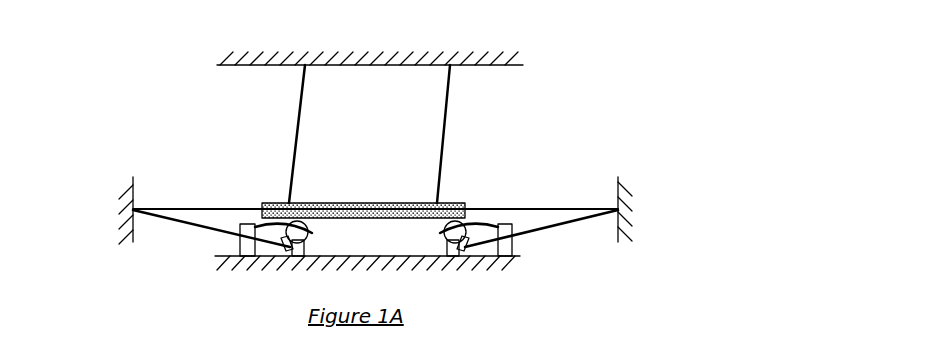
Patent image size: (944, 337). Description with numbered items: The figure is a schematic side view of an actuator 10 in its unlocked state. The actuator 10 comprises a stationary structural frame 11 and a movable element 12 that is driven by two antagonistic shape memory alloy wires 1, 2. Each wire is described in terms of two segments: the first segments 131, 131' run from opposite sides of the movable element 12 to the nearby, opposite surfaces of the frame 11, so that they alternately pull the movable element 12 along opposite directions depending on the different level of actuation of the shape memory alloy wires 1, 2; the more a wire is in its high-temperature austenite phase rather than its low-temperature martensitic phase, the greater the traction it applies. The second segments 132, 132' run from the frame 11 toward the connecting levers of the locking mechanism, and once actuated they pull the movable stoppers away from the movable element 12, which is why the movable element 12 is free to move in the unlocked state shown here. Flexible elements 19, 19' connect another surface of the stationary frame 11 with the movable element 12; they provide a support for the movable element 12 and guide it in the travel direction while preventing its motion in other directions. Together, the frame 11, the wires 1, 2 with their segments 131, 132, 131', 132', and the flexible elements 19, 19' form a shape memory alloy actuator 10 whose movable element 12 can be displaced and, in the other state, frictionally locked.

The actuator 10 is at (650, 115).
The structural frame 11 is at (377, 65).
The movable element 12 is at (363, 210).
The flexible element 19 is at (261, 134).
The flexible element 19' is at (479, 134).
The shape memory alloy wire 1 is at (223, 216).
The shape memory alloy wire 2 is at (535, 236).
The first segment of shape memory alloy wire 131 is at (256, 179).
The second segment of shape memory alloy wire 132 is at (213, 255).
The first segment of shape memory alloy wire 131' is at (499, 178).
The second segment of shape memory alloy wire 132' is at (537, 249).